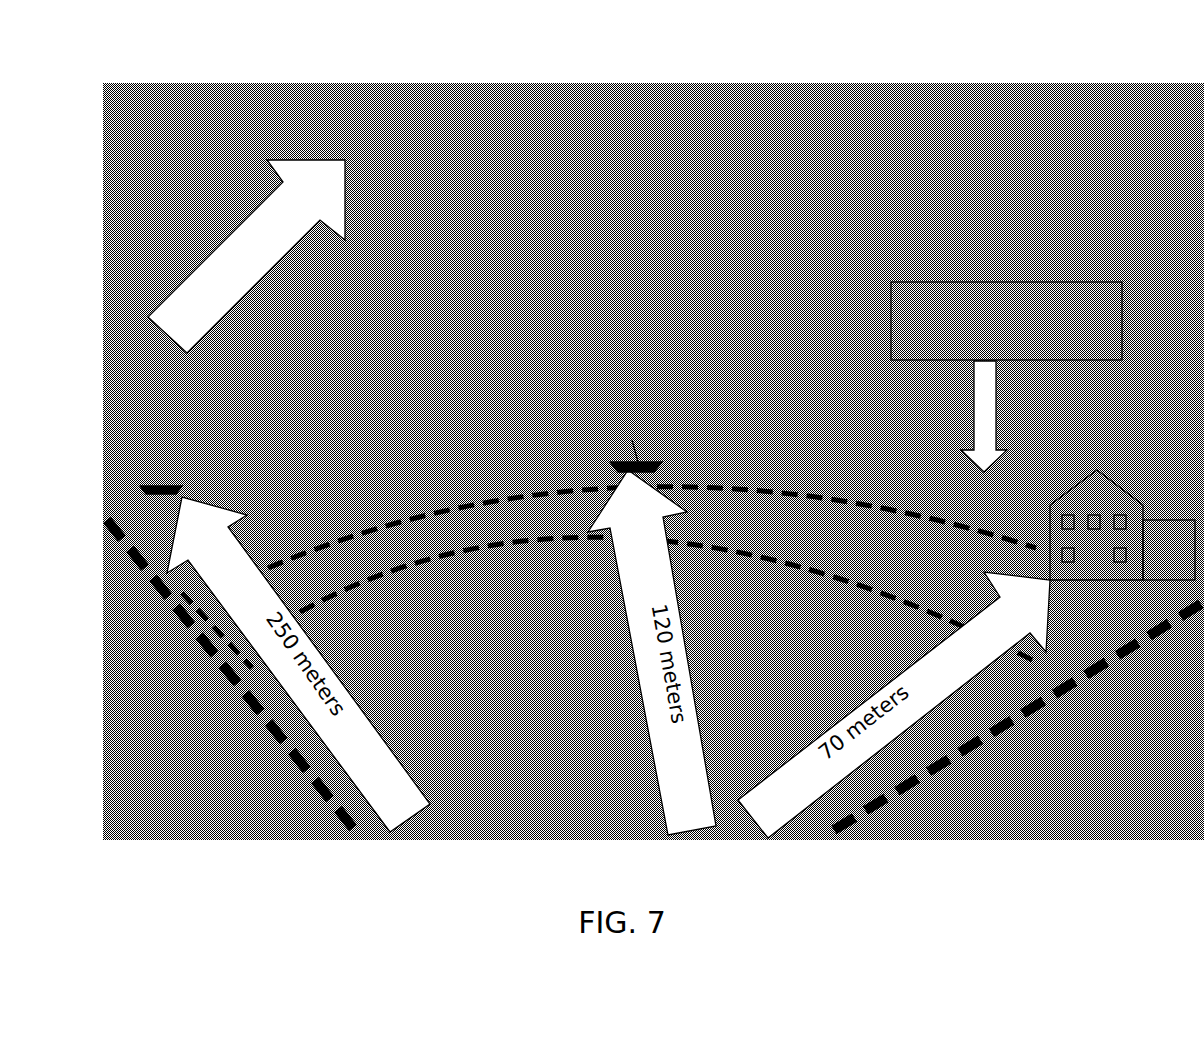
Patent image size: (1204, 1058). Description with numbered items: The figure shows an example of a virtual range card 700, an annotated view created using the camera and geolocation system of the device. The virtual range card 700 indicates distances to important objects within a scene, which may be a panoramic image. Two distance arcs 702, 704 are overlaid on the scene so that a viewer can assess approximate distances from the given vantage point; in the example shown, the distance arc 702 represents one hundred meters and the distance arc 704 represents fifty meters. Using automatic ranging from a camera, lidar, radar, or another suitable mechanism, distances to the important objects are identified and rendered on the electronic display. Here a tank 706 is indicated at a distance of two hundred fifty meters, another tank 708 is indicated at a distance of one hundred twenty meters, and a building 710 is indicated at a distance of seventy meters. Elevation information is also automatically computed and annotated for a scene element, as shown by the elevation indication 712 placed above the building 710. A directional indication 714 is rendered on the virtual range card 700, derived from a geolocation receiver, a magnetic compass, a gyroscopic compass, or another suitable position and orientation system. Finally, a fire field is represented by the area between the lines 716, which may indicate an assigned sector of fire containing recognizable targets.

The virtual range card 700 is at (966, 58).
The distance arc 702 is at (745, 482).
The distance arc 704 is at (752, 562).
The tank 706 is at (160, 483).
The tank 708 is at (642, 452).
The building 710 is at (1085, 470).
The elevation indication 712 is at (1034, 282).
The directional indication 714 is at (272, 272).
The lines 716 is at (188, 642).